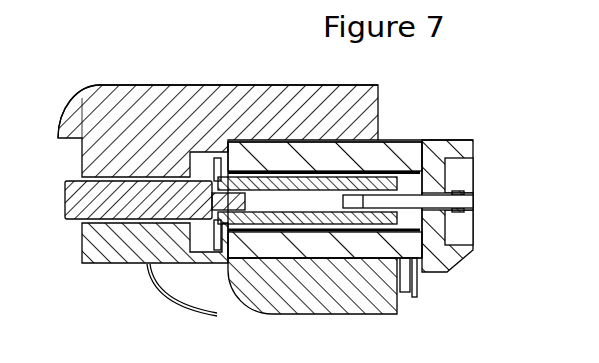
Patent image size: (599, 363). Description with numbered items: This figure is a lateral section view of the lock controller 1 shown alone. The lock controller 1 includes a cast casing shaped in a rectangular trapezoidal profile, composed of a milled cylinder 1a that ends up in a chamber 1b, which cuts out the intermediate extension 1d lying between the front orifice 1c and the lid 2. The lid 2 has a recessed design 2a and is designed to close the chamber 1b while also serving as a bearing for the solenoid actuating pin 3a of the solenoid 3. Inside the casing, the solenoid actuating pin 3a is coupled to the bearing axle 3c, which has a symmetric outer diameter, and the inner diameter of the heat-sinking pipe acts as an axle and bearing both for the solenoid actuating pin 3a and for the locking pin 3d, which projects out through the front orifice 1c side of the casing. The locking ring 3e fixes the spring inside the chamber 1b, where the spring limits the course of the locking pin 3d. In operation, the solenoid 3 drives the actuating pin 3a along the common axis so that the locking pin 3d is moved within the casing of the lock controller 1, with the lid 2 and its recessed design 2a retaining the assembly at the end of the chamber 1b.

The lock controller 1 is at (272, 85).
The milled cylinder 1a is at (393, 262).
The chamber 1b is at (150, 85).
The front orifice 1c is at (75, 101).
The intermediate extension 1d is at (98, 265).
The lid 2 is at (470, 141).
The recessed design 2a is at (462, 178).
The solenoid 3 is at (328, 255).
The solenoid actuating pin 3a is at (463, 203).
The bearing axle 3c is at (268, 212).
The locking pin 3d is at (65, 185).
The locking ring 3e is at (220, 217).